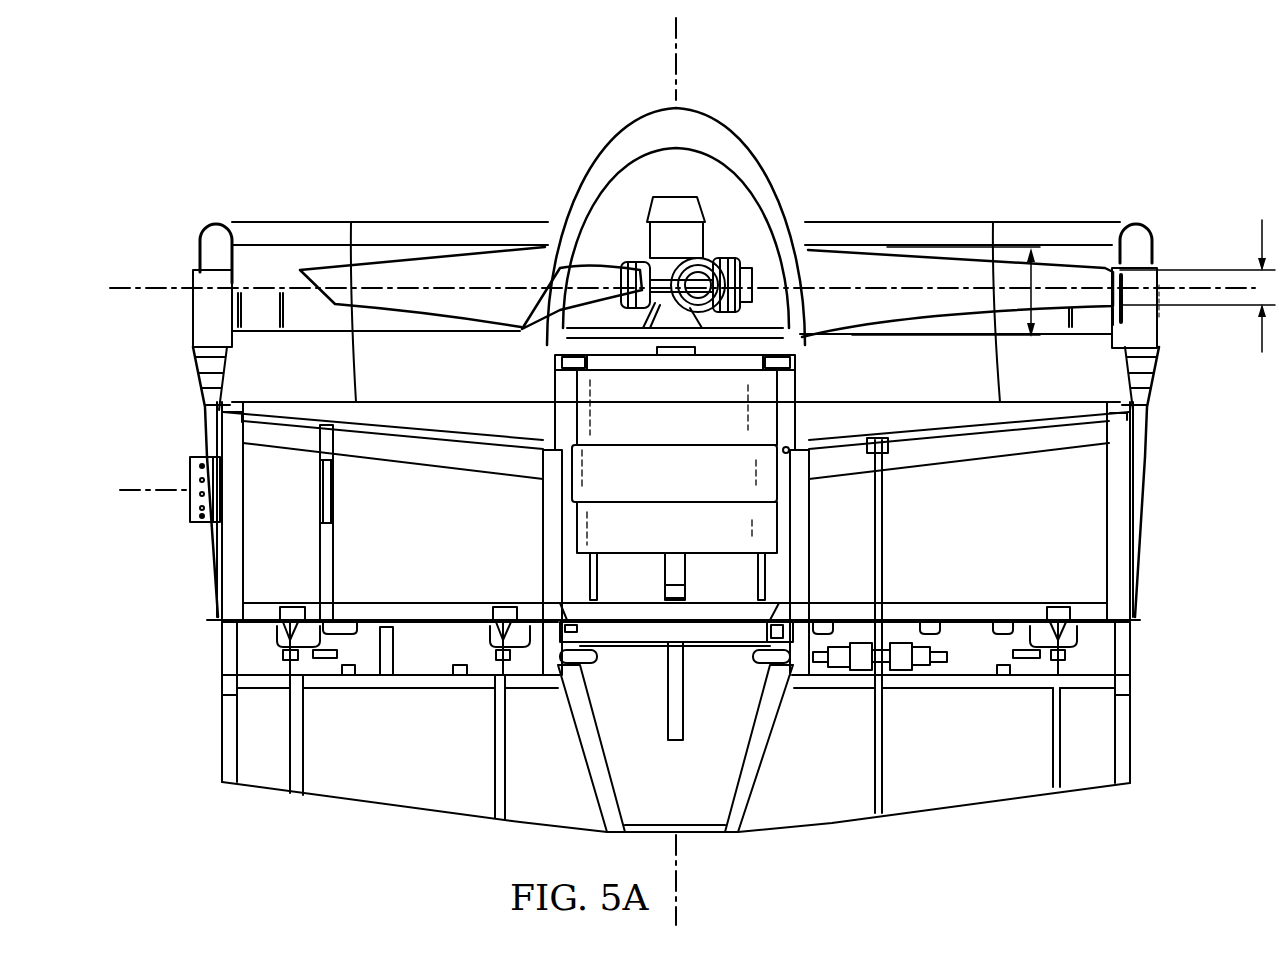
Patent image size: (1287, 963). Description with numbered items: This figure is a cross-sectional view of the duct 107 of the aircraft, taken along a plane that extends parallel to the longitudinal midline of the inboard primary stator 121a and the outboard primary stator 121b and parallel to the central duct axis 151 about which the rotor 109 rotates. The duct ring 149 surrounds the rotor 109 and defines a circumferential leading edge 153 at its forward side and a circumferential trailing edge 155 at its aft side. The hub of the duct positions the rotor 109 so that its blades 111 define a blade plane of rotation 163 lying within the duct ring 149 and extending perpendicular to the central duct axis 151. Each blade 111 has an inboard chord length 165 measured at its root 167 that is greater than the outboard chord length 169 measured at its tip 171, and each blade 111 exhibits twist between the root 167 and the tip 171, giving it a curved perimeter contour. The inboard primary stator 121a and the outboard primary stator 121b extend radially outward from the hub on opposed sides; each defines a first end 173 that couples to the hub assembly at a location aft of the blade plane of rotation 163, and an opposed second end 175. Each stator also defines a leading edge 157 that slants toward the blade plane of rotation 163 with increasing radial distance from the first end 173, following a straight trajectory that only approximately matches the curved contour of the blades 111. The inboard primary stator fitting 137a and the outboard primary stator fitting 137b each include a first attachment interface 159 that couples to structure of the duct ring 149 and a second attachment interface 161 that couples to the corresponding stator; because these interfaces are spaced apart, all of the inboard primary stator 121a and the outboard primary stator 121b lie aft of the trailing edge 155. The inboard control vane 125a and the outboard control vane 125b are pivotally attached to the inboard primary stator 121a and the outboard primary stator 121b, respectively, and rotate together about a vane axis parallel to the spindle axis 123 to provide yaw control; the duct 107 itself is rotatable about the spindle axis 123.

The duct 107 is at (1100, 80).
The rotor 109 is at (734, 135).
The blades 111 is at (948, 246).
The inboard primary stator 121a is at (420, 582).
The outboard primary stator 121b is at (982, 583).
The spindle axis 123 is at (132, 487).
The inboard control vane 125a is at (347, 790).
The outboard control vane 125b is at (1022, 788).
The inboard primary stator fitting 137a is at (205, 542).
The outboard primary stator fitting 137b is at (1145, 495).
The duct ring 149 is at (398, 222).
The central duct axis 151 is at (680, 33).
The leading edge 153 is at (484, 222).
The trailing edge 155 is at (462, 448).
The leading edge 157 is at (397, 425).
The first attachment interface 159 is at (200, 315).
The second attachment interface 161 is at (213, 577).
The blade plane of rotation 163 is at (134, 284).
The inboard chord length 165 is at (1032, 245).
The root 167 is at (813, 268).
The outboard chord length 169 is at (1260, 233).
The tip 171 is at (1109, 277).
The first end 173 is at (543, 572).
The second end 175 is at (223, 445).